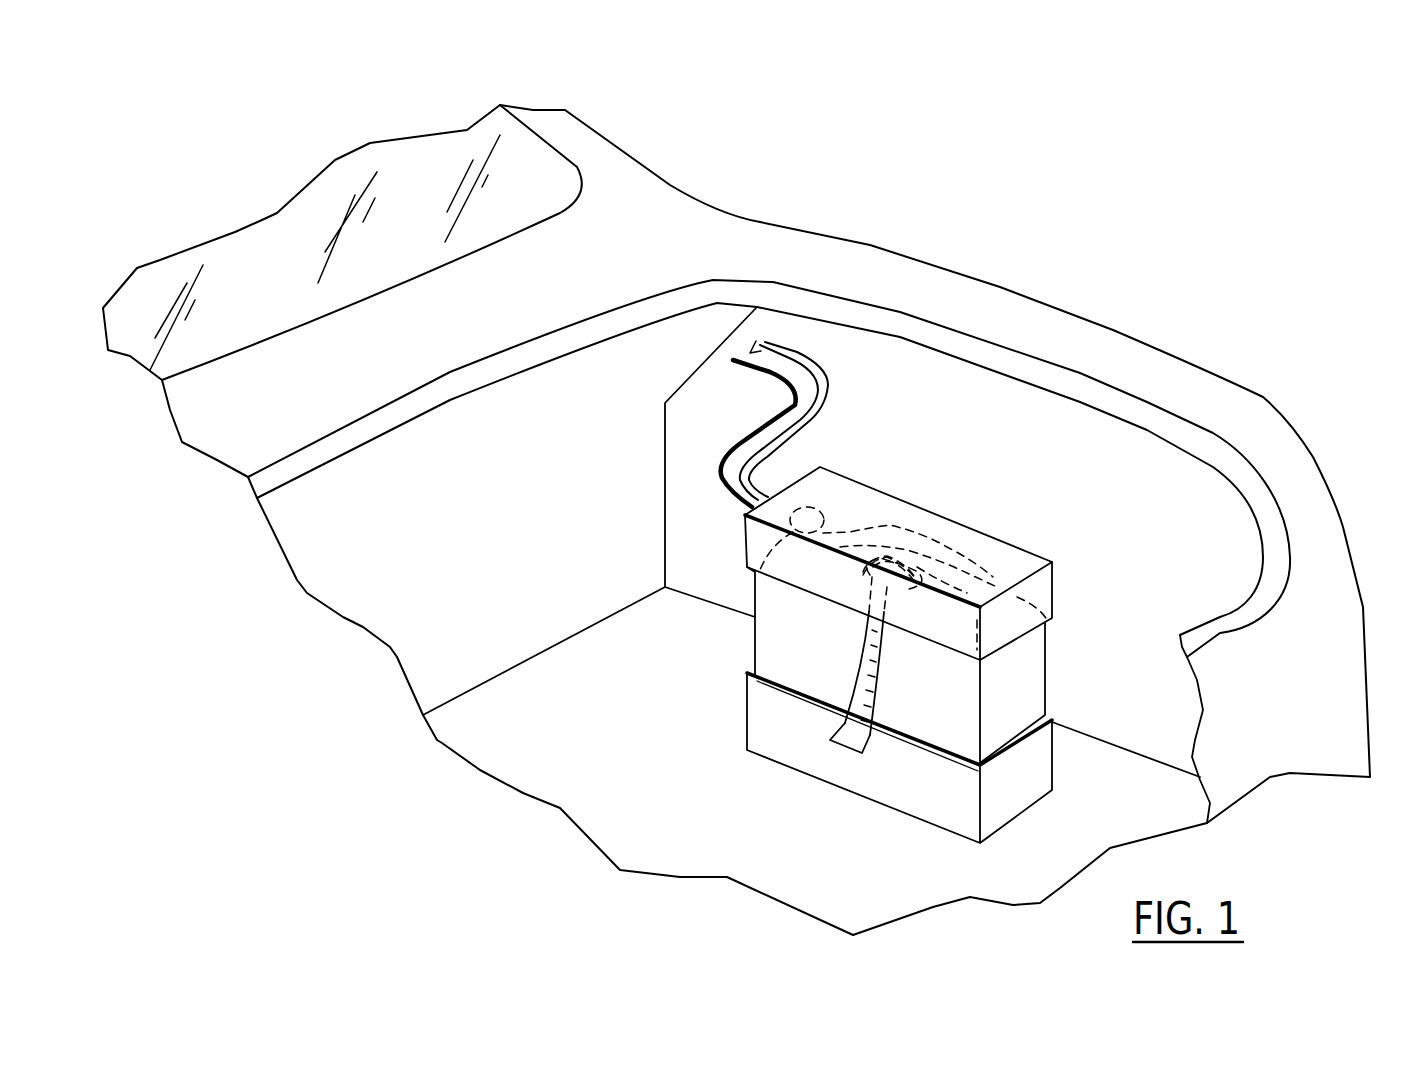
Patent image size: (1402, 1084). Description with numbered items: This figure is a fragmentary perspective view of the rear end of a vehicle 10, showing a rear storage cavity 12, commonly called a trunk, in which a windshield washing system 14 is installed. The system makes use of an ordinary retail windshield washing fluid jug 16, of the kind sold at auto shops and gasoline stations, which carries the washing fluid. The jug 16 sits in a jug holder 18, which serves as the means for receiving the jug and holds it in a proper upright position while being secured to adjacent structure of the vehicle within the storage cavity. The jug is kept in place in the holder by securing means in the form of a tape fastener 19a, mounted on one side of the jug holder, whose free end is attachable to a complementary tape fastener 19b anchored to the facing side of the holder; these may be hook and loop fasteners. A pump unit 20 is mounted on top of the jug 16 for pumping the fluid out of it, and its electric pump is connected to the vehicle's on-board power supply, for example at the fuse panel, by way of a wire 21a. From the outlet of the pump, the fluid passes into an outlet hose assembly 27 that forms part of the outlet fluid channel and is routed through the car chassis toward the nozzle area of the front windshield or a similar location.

The vehicle 10 is at (1028, 284).
The rear storage cavity 12 is at (840, 876).
The windshield washing system 14 is at (957, 862).
The windshield washing fluid jug 16 is at (773, 637).
The jug holder 18 is at (808, 777).
The tape fastener 19a is at (880, 677).
The complementary tape fastener 19b is at (870, 745).
The pump unit 20 is at (950, 512).
The wire 21a is at (767, 415).
The outlet hose assembly 27 is at (823, 390).